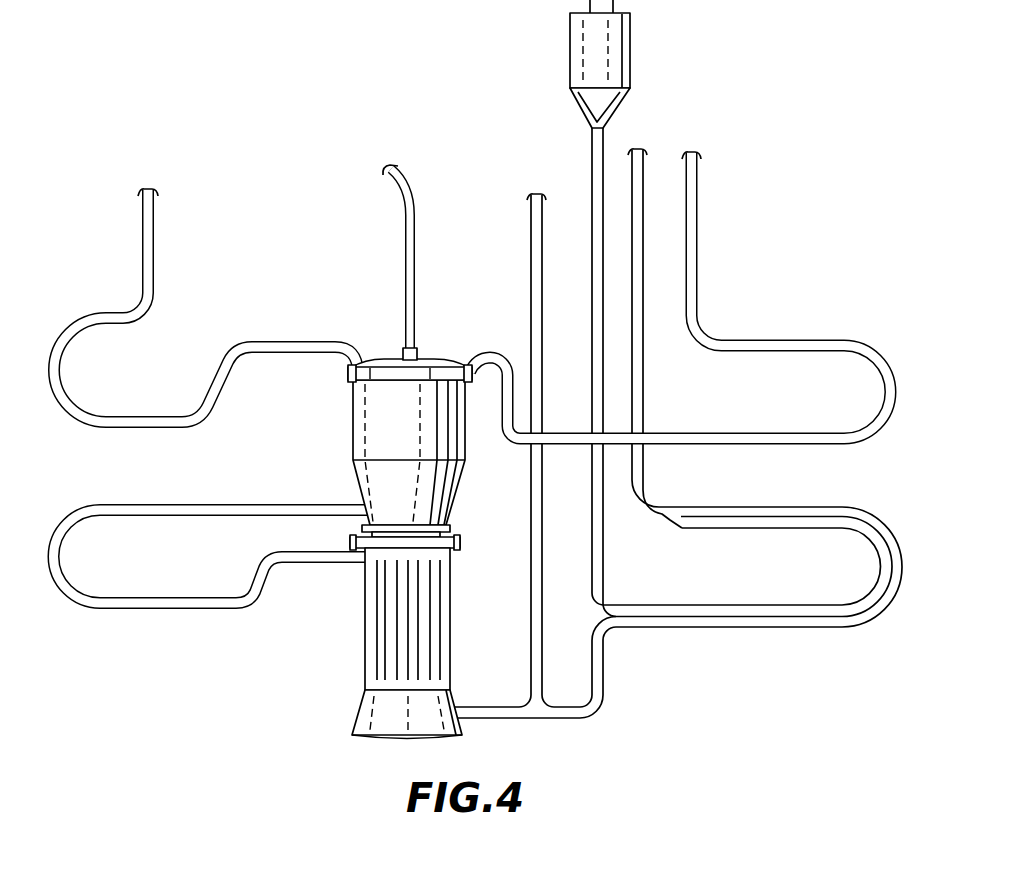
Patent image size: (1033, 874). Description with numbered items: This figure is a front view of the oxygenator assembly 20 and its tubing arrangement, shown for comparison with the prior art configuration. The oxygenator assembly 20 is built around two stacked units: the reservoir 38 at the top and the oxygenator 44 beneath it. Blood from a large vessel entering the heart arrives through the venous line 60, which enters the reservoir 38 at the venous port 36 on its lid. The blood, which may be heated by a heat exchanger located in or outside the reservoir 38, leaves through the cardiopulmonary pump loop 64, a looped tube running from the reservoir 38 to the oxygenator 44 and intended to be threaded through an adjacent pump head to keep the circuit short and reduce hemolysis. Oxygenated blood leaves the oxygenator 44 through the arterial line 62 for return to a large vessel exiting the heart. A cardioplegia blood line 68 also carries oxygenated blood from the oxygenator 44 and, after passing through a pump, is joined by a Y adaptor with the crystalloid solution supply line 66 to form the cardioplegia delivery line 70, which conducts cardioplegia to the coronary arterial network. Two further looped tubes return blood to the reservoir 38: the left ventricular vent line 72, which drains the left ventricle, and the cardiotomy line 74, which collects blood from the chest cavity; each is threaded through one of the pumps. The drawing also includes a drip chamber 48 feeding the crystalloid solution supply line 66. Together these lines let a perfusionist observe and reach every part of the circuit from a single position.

The oxygenator assembly 20 is at (378, 330).
The venous port 36 is at (420, 352).
The reservoir 38 is at (352, 438).
The oxygenator 44 is at (366, 622).
The drip chamber 48 is at (631, 52).
The venous line 60 is at (405, 246).
The arterial line 62 is at (531, 222).
The cardiopulmonary pump loop 64 is at (167, 608).
The crystalloid solution supply line 66 is at (592, 172).
The cardioplegia blood line 68 is at (604, 682).
The cardioplegia delivery line 70 is at (645, 163).
The left ventricular vent line 72 is at (154, 228).
The cardiotomy line 74 is at (699, 203).